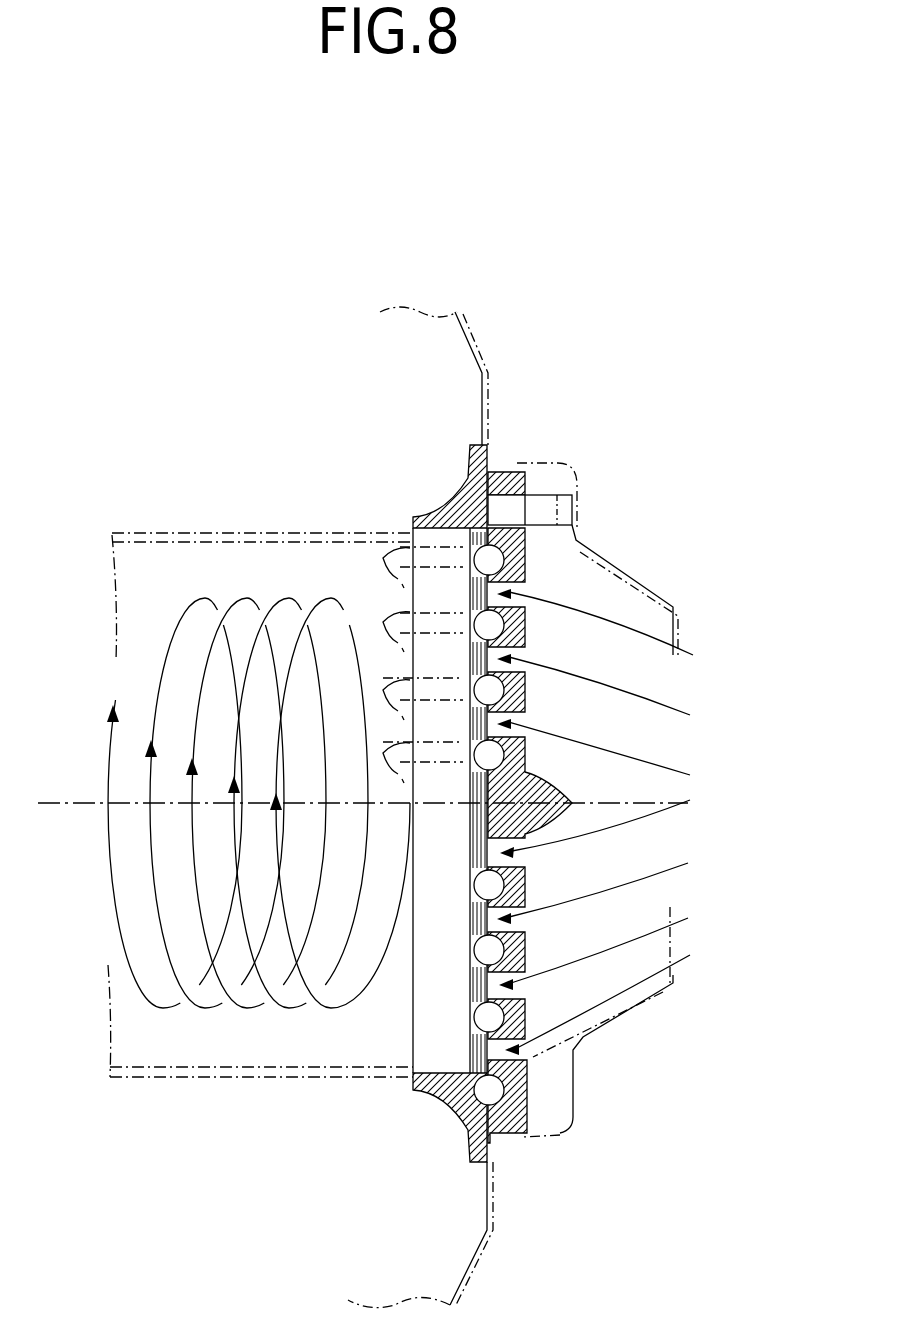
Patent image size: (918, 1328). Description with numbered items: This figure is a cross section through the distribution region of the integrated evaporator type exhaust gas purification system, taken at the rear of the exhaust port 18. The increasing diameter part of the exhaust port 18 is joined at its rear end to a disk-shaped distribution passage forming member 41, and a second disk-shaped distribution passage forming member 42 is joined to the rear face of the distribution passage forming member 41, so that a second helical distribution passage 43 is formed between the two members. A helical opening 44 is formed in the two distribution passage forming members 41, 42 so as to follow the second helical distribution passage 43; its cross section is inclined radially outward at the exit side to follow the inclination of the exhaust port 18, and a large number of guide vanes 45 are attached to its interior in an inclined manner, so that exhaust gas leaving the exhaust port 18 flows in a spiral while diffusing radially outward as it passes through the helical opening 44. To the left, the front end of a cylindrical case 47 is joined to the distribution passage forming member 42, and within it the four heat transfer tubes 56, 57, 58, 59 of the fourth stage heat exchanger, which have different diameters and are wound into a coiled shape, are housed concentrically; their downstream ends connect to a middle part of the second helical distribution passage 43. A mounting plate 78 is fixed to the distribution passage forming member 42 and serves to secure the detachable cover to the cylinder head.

The exhaust port 18 is at (627, 583).
The distribution passage forming member 41 is at (503, 478).
The distribution passage forming member 42 is at (460, 508).
The second helical distribution passage 43 is at (488, 690).
The helical opening 44 is at (497, 970).
The guide vanes 45 is at (493, 642).
The cylindrical case 47 is at (215, 533).
The heat transfer tube 56 is at (441, 762).
The heat transfer tube 57 is at (450, 690).
The heat transfer tube 58 is at (443, 617).
The heat transfer tube 59 is at (430, 543).
The mounting plate 78 is at (480, 320).